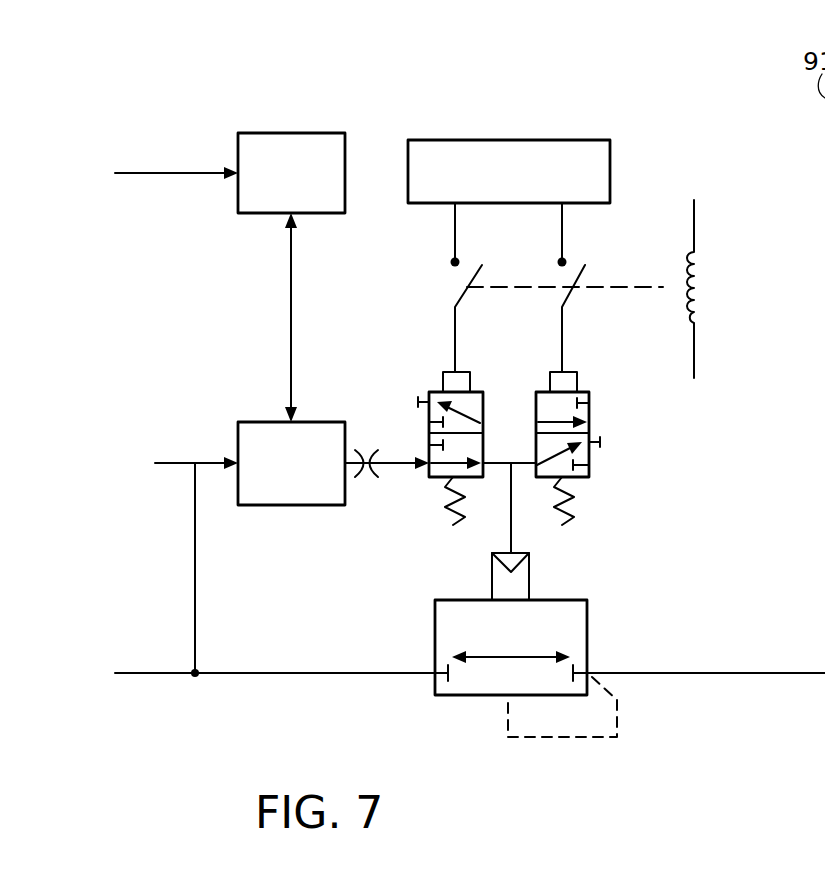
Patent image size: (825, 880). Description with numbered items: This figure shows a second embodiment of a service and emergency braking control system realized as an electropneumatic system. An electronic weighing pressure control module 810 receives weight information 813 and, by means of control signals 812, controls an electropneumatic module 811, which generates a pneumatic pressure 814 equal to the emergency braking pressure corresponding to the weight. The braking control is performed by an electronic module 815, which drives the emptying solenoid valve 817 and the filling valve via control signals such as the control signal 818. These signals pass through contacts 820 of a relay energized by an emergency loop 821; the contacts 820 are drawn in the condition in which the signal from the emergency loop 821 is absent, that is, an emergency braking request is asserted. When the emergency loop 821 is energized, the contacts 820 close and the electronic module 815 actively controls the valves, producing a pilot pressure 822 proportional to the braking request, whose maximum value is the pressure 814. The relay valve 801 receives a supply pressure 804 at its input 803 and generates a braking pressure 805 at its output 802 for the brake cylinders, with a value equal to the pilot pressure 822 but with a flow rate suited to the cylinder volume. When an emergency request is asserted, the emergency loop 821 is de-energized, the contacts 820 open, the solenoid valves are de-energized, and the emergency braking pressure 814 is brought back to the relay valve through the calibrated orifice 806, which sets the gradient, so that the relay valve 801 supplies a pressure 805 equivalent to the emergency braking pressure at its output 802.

The relay valve 801 is at (580, 598).
The output 802 is at (604, 670).
The input 803 is at (437, 672).
The supply pressure 804 is at (155, 670).
The braking pressure 805 is at (780, 670).
The calibrated orifice 806 is at (367, 479).
The electronic weighing pressure control module 810 is at (297, 133).
The electropneumatic module 811 is at (250, 422).
The control signals 812 is at (291, 320).
The weight information 813 is at (153, 172).
The pneumatic pressure 814 is at (395, 462).
The electronic module 815 is at (545, 140).
The emptying solenoid valve 817 is at (590, 384).
The control signal 818 is at (472, 392).
The contacts 820 is at (582, 278).
The emergency loop 821 is at (700, 287).
The pilot pressure 822 is at (508, 523).